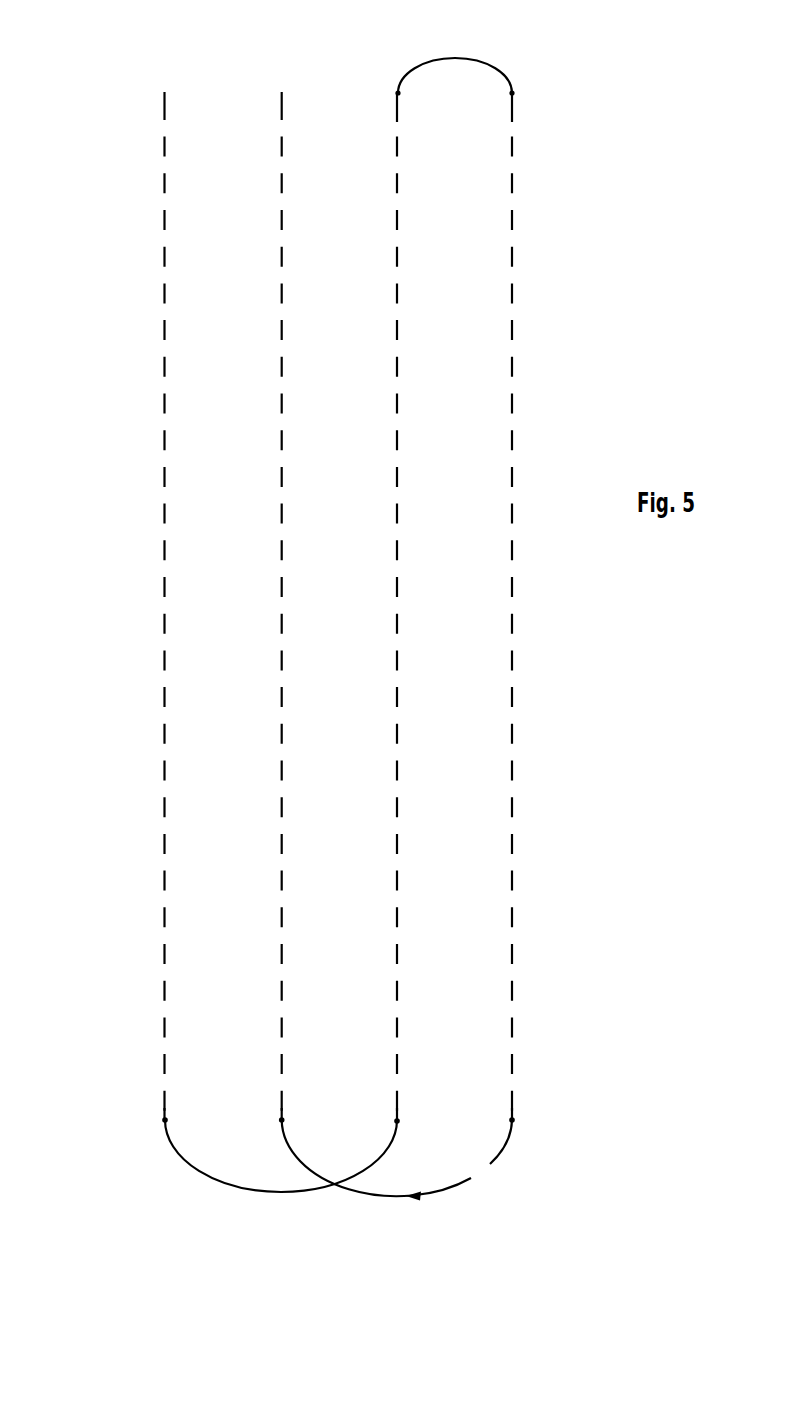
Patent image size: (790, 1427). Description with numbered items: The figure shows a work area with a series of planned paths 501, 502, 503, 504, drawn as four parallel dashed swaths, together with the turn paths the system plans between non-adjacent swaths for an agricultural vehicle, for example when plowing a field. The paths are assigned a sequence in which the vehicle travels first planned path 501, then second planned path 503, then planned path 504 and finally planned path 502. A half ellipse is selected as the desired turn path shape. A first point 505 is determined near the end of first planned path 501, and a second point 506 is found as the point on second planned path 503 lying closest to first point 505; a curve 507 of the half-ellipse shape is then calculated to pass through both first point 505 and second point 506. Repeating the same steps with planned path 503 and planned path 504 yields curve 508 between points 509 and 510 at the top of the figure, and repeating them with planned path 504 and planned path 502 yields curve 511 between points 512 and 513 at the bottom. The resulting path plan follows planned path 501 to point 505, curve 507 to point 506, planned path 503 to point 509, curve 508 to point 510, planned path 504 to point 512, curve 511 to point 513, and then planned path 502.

The first planned path 501 is at (164, 542).
The planned path 502 is at (282, 583).
The second planned path 503 is at (397, 570).
The planned path 504 is at (512, 547).
The first point 505 is at (165, 1118).
The second point 506 is at (397, 1122).
The curve 507 is at (280, 1197).
The curve 508 is at (500, 70).
The point 509 is at (398, 93).
The point 510 is at (513, 93).
The curve 511 is at (490, 1165).
The point 512 is at (512, 1120).
The point 513 is at (282, 1120).